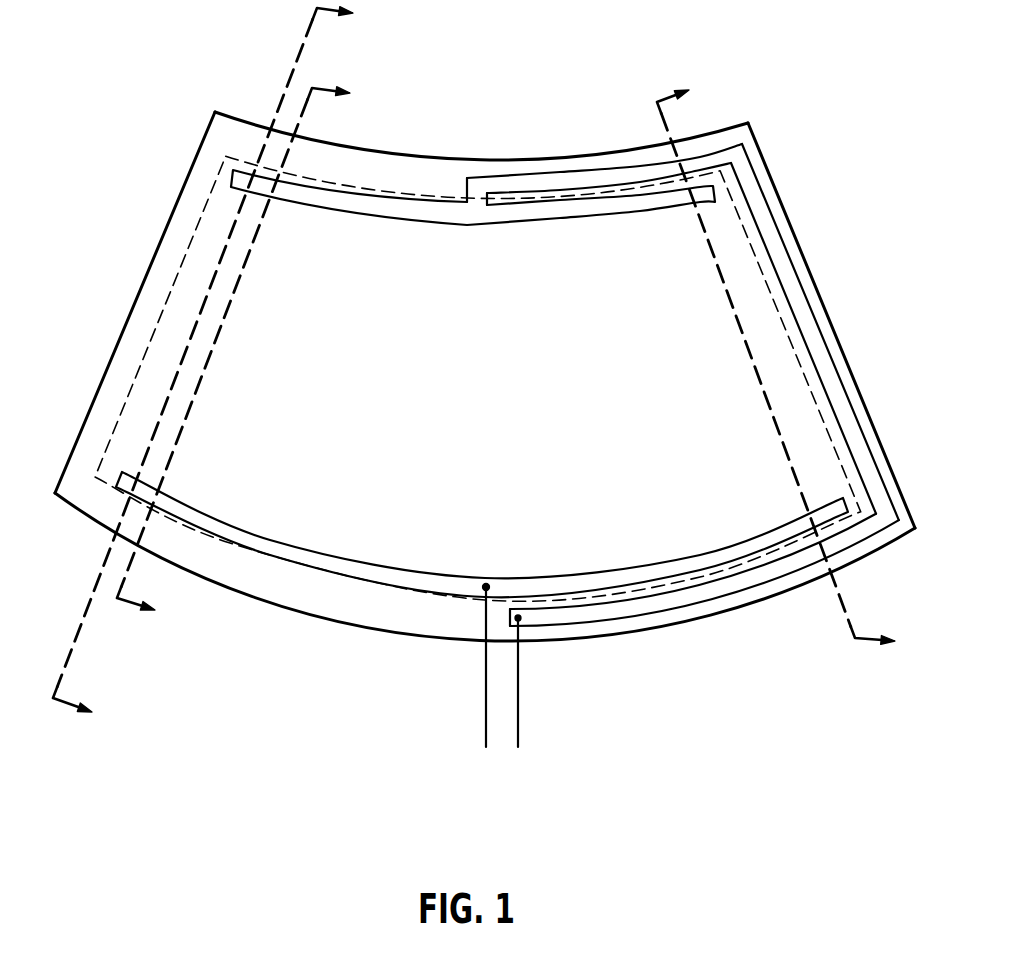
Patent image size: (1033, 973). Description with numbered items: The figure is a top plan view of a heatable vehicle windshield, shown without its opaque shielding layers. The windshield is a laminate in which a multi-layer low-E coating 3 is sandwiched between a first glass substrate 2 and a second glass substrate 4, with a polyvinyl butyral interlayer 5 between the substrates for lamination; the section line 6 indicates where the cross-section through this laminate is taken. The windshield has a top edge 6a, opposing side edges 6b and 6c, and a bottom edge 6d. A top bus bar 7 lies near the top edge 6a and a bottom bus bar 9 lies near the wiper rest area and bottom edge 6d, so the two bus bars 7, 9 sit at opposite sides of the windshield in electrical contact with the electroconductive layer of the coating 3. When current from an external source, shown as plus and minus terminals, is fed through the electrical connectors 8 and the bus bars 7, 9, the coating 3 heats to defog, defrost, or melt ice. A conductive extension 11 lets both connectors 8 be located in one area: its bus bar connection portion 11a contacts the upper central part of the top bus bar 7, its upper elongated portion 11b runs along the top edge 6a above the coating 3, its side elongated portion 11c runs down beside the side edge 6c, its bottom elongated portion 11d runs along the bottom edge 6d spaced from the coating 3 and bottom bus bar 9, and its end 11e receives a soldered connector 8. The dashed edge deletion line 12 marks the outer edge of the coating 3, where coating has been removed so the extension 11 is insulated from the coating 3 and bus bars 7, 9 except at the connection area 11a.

The first glass substrate 2 is at (473, 386).
The multi-layer low-E coating 3 is at (478, 386).
The second glass substrate 4 is at (244, 353).
The polyvinyl butyral interlayer 5 is at (75, 222).
The section line 6 is at (785, 367).
The top edge 6a is at (527, 160).
The side edge 6b is at (208, 125).
The side edge 6c is at (827, 310).
The bottom edge 6d is at (673, 623).
The top bus bar 7 is at (373, 210).
The electrical connectors 8 is at (517, 710).
The bottom bus bar 9 is at (310, 557).
The conductive extension 11 is at (671, 366).
The bus bar connection portion 11a is at (450, 177).
The upper elongated portion 11b is at (635, 177).
The side elongated portion 11c is at (748, 180).
The bottom elongated portion 11d is at (740, 583).
The end 11e is at (496, 609).
The edge deletion line 12 is at (200, 217).